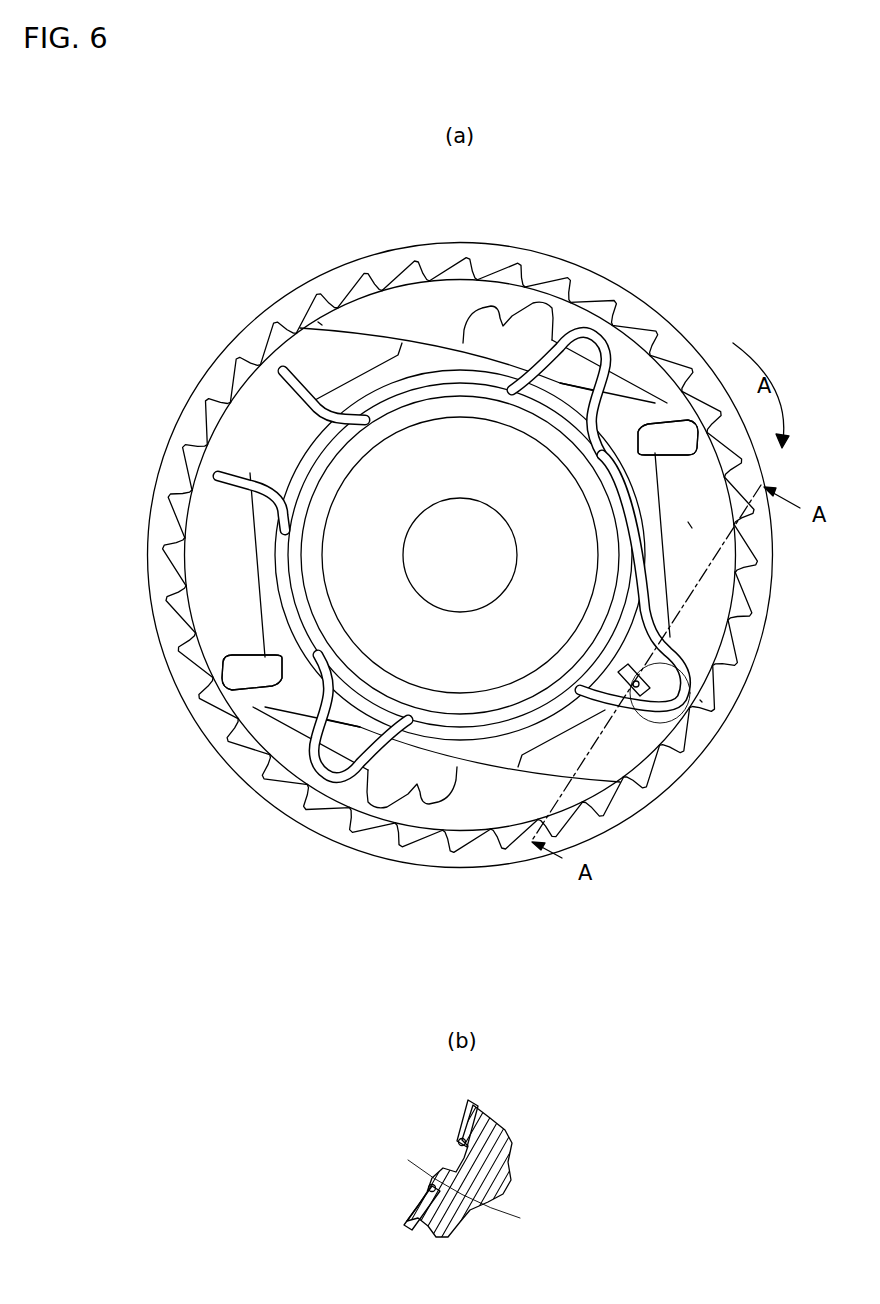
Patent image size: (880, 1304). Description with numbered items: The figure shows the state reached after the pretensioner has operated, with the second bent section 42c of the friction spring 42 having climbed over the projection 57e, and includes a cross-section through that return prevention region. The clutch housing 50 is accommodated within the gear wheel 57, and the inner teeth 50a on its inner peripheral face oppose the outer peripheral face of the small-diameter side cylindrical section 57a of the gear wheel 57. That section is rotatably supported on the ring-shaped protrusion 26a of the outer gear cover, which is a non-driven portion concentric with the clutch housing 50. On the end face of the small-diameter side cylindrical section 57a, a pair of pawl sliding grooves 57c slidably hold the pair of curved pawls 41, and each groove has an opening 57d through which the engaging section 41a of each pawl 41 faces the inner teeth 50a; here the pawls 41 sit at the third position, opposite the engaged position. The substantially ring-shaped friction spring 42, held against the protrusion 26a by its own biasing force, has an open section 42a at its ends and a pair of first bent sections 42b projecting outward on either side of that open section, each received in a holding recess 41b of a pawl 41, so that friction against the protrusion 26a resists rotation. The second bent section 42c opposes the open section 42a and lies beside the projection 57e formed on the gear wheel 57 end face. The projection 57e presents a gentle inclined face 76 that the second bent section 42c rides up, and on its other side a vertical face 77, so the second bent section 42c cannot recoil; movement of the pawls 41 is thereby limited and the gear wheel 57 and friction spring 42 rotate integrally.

The clutch housing 50 is at (705, 352).
The inner teeth 50a is at (430, 262).
The gear wheel 57 is at (525, 566).
The small-diameter side cylindrical section 57a is at (690, 525).
The pawl sliding grooves 57c is at (663, 422).
The opening 57d is at (324, 328).
The projection 57e is at (703, 702).
The protrusion 26a is at (491, 722).
The pawls 41 is at (472, 538).
The engaging section 41a is at (512, 318).
The holding recess 41b is at (578, 376).
The friction spring 42 is at (434, 708).
The open section 42a is at (342, 412).
The first bent sections 42b is at (614, 372).
The second bent section 42c is at (688, 690).
The inclined face 76 is at (642, 680).
The vertical face 77 is at (636, 700).